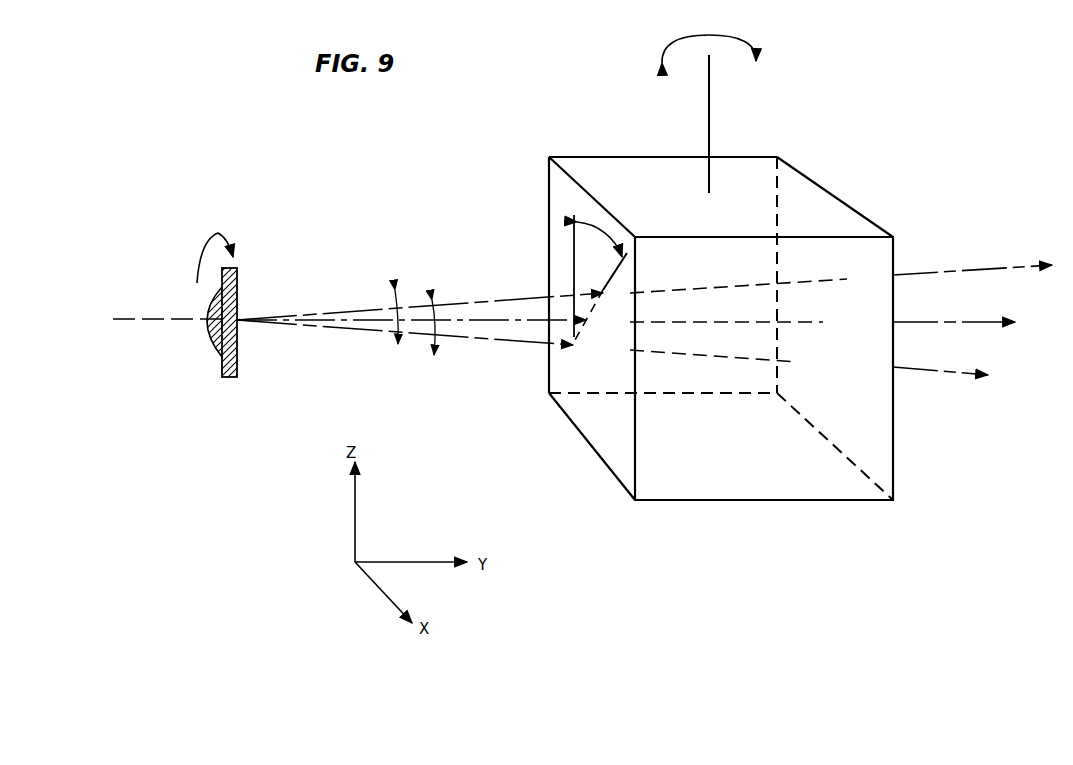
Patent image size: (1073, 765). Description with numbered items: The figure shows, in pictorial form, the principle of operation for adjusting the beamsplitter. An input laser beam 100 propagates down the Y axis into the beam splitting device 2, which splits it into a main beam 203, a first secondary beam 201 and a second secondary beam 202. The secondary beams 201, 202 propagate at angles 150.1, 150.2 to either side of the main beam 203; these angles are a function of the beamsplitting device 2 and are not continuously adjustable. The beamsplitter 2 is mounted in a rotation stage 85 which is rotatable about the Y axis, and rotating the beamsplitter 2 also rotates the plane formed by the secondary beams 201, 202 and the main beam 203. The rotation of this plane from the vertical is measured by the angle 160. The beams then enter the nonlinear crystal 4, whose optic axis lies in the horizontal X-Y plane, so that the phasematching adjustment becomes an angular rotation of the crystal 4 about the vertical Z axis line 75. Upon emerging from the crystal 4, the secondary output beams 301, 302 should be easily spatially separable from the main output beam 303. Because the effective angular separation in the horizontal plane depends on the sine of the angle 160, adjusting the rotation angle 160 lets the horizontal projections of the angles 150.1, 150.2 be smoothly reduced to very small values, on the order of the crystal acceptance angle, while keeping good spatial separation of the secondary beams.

The nonlinear crystal 4 is at (593, 160).
The vertical line 75 is at (712, 120).
The angle 160 is at (608, 235).
The beam splitting device 2 is at (212, 341).
The rotation stage 85 is at (230, 378).
The input laser beam 100 is at (126, 318).
The first secondary beam 201 is at (292, 313).
The second secondary beam 202 is at (303, 328).
The main beam 203 is at (314, 312).
The angle 150.1 is at (404, 308).
The angle 150.2 is at (444, 330).
The secondary output beam 301 is at (1012, 260).
The secondary output beam 302 is at (960, 372).
The main output beam 303 is at (999, 307).